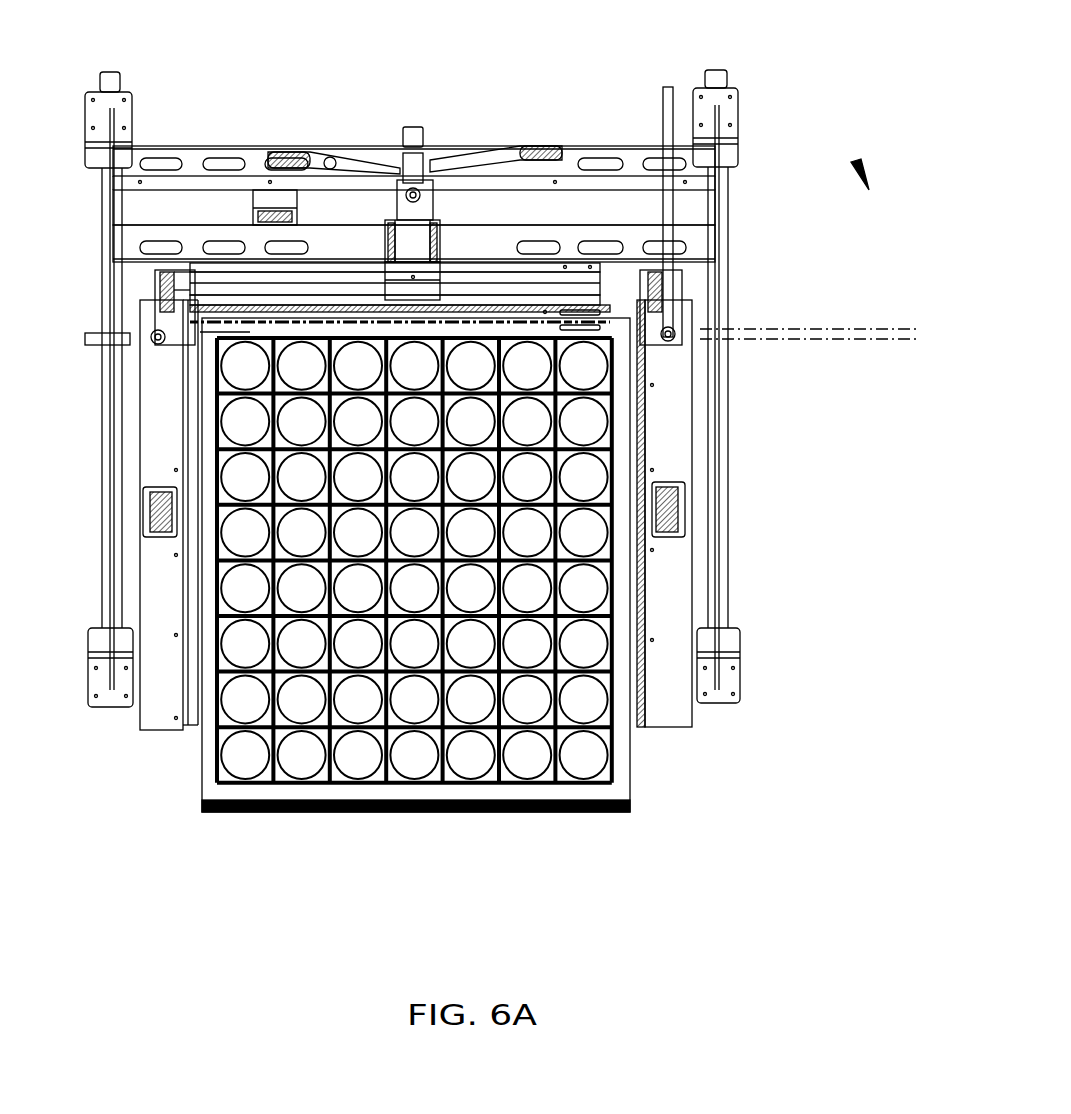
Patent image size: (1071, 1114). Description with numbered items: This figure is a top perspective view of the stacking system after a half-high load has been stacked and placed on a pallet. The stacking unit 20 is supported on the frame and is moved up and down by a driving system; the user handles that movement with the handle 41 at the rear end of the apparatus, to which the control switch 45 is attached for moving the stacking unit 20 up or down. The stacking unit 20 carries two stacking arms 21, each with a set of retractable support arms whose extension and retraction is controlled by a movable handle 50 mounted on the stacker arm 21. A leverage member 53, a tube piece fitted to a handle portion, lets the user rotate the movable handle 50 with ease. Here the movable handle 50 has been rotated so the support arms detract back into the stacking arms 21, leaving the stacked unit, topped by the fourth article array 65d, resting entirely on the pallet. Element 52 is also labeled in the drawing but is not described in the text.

The stacking unit 20 is at (728, 548).
The stacking arm 21 is at (675, 442).
The handle 41 is at (470, 165).
The control switch 45 is at (330, 160).
The movable handle 50 is at (670, 307).
The left clamp 52 is at (150, 312).
The leverage member 53 is at (668, 105).
The fourth article array 65d is at (620, 778).